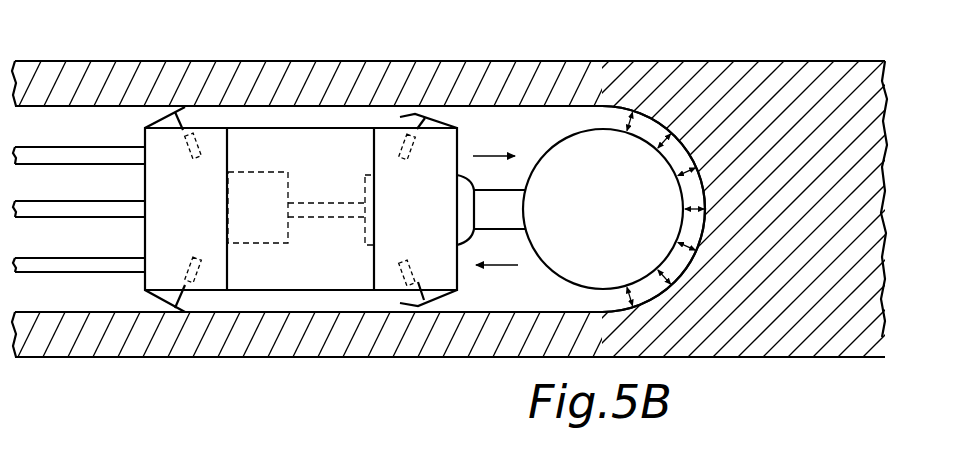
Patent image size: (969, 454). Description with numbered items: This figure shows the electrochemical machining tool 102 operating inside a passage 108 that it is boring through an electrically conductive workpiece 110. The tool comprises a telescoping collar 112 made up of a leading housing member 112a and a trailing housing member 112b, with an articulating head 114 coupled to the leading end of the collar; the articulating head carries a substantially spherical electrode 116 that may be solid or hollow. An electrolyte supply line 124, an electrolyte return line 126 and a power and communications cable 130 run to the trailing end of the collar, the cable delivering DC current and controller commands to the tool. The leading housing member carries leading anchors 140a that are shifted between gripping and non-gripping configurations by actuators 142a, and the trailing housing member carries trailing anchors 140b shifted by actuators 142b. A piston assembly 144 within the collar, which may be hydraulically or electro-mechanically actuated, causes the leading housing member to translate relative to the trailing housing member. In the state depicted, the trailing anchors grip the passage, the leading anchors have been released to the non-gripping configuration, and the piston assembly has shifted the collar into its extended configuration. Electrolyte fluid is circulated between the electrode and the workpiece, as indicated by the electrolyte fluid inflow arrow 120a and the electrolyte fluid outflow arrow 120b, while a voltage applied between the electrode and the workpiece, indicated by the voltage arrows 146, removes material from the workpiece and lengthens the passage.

The electrochemical machining tool 102 is at (321, 217).
The passage 108 is at (548, 112).
The workpiece 110 is at (712, 72).
The telescoping collar 112 is at (301, 151).
The leading housing member 112a is at (415, 209).
The trailing housing member 112b is at (186, 209).
The articulating head 114 is at (587, 138).
The electrode 116 is at (603, 209).
The electrolyte fluid inflow arrow 120a is at (493, 149).
The electrolyte fluid outflow arrow 120b is at (503, 266).
The electrolyte supply line 124 is at (97, 147).
The electrolyte return line 126 is at (97, 201).
The power and communications cable 130 is at (97, 258).
The leading anchors 140a is at (418, 297).
The trailing anchors 140b is at (185, 305).
The actuators 142a is at (402, 262).
The actuators 142b is at (200, 272).
The piston assembly 144 is at (258, 243).
The voltage arrows 146 is at (626, 125).